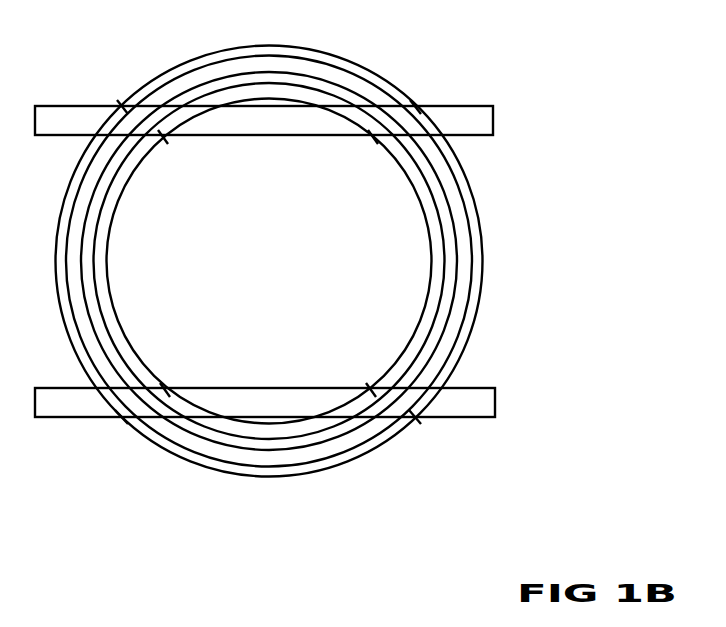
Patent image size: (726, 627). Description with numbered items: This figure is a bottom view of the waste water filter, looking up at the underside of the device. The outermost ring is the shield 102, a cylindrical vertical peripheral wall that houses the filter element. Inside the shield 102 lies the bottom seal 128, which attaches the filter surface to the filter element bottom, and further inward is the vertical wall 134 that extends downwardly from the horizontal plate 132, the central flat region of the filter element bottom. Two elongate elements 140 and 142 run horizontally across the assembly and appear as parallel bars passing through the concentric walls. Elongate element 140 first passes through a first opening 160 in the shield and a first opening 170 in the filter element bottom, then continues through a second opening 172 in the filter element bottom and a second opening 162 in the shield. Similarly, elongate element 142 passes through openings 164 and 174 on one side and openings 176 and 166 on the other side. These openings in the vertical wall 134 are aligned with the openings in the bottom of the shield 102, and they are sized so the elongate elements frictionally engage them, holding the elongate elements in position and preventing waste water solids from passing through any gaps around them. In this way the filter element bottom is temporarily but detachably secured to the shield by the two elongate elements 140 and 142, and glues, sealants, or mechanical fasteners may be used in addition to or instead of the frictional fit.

The shield 102 is at (478, 302).
The bottom seal 128 is at (440, 200).
The horizontal plate 132 is at (281, 261).
The vertical wall 134 is at (420, 342).
The elongate element 140 is at (442, 408).
The elongate element 142 is at (440, 118).
The first opening in the shield 160 is at (415, 417).
The second opening in the shield 162 is at (123, 418).
The opening in the shield 164 is at (415, 107).
The opening in the shield 166 is at (122, 107).
The first opening in the filter element bottom 170 is at (373, 389).
The second opening in the filter element bottom 172 is at (165, 390).
The opening in the filter element bottom 174 is at (372, 137).
The opening in the filter element bottom 176 is at (162, 137).